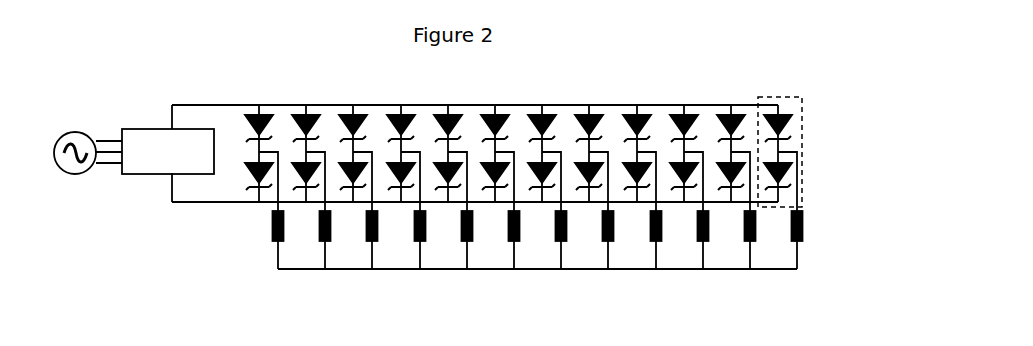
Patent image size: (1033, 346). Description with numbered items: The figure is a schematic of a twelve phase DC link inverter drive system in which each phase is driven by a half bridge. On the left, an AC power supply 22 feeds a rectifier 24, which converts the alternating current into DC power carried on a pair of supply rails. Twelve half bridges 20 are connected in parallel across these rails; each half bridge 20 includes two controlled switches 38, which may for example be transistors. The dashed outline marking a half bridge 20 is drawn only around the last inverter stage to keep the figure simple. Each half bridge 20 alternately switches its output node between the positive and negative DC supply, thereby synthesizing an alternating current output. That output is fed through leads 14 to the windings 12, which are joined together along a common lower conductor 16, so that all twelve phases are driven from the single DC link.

The windings 12 is at (272, 237).
The leads 14 is at (277, 193).
The common return line 16 is at (482, 270).
The half bridge 20 is at (835, 168).
The AC power supply 22 is at (73, 128).
The rectifier 24 is at (150, 128).
The controlled switch 38 is at (790, 173).